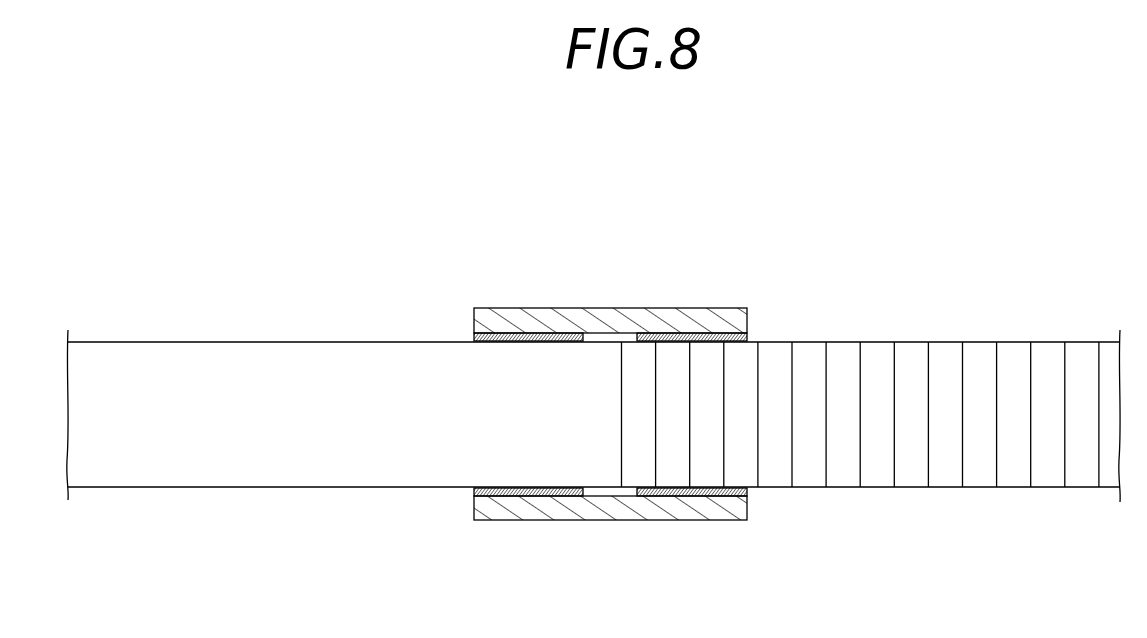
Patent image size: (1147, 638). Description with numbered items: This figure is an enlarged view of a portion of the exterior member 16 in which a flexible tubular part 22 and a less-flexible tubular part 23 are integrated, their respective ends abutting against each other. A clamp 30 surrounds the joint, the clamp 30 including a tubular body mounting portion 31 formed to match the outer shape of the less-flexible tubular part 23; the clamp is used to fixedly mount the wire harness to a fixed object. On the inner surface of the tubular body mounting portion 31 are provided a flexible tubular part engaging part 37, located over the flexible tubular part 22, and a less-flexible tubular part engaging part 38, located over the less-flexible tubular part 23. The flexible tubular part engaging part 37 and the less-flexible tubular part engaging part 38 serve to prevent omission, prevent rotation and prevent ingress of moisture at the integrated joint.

The wire harness 16 is at (176, 208).
The flexible tubular part 22 is at (979, 342).
The less-flexible tubular part 23 is at (227, 341).
The clamp 30 is at (509, 308).
The tubular body mounting portion 31 is at (616, 320).
The flexible tubular part engaging part 37 is at (707, 333).
The less-flexible tubular part engaging part 38 is at (492, 333).